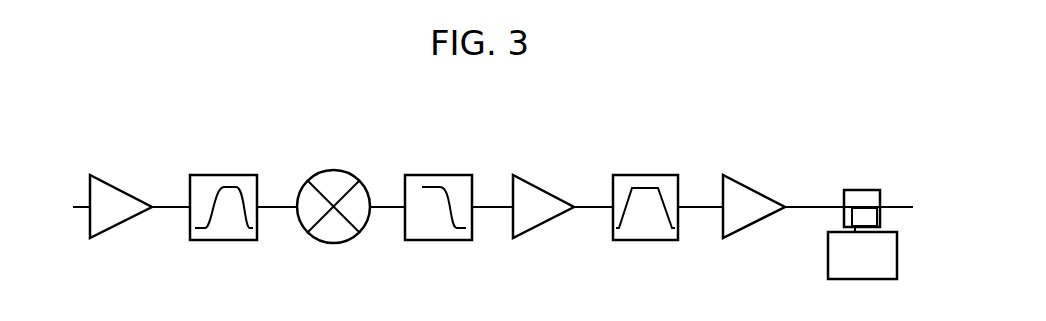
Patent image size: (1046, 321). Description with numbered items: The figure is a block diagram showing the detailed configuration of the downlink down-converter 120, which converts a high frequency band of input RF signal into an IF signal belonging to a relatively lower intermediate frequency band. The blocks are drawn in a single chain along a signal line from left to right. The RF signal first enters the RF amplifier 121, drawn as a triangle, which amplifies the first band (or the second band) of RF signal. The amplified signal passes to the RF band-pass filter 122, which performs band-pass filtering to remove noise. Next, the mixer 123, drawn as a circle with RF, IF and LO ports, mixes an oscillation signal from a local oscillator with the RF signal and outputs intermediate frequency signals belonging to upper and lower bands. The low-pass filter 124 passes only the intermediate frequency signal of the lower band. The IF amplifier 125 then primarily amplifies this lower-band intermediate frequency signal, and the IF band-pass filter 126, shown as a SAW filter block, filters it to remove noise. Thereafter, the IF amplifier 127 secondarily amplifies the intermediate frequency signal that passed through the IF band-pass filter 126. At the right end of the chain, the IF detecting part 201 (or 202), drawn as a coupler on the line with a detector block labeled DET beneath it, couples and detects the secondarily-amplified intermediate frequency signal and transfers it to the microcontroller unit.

The downlink down-converter 120 is at (496, 99).
The RF amplifier 121 is at (103, 233).
The RF band-pass filter 122 is at (217, 240).
The mixer 123 is at (330, 243).
The low-pass filter 124 is at (432, 240).
The IF amplifier 125 is at (519, 238).
The IF band-pass filter 126 is at (623, 240).
The IF amplifier 127 is at (732, 245).
The IF detecting part 201 is at (873, 279).
The IF detecting part 202 is at (862, 273).